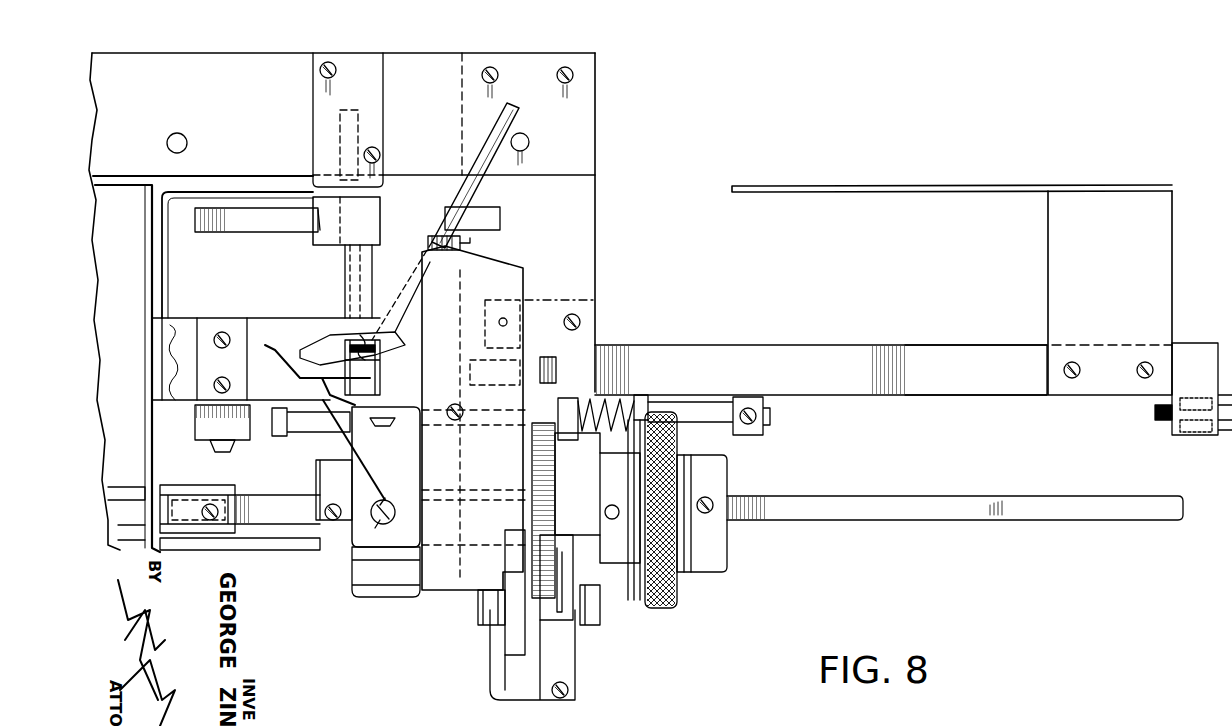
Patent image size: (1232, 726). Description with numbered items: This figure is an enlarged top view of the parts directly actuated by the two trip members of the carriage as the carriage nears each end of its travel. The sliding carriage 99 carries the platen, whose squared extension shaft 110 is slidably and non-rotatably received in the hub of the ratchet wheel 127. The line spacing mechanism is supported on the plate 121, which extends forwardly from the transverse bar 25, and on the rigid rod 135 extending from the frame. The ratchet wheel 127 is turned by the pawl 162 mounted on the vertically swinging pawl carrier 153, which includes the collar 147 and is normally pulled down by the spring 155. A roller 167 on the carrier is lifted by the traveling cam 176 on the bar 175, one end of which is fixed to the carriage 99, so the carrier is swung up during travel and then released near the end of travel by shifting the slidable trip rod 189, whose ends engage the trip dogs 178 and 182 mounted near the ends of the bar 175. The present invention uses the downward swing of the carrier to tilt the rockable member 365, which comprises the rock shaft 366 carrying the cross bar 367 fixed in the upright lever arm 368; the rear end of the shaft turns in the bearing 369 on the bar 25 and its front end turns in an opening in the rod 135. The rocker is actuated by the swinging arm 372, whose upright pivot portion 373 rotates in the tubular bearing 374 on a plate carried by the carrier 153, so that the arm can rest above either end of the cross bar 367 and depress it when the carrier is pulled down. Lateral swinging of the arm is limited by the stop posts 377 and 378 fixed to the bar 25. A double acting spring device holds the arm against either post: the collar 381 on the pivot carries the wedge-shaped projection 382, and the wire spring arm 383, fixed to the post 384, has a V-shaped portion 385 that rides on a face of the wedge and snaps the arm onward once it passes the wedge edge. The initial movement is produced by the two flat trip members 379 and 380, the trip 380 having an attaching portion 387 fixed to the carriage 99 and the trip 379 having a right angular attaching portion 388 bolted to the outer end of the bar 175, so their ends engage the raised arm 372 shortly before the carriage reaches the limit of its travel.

The transverse bar 25 is at (245, 90).
The sliding carriage 99 is at (128, 286).
The squared extension shaft 110 is at (1030, 488).
The plate 121 is at (604, 239).
The ratchet wheel 127 is at (538, 482).
The rigid rod 135 is at (284, 550).
The ring or collar 147 is at (386, 598).
The pawl carrier 153 is at (512, 282).
The spring 155 is at (466, 240).
The pawl 162 is at (566, 545).
The roller 167 is at (544, 355).
The bar 175 is at (958, 355).
The traveling cam 176 is at (790, 350).
The trip dog 178 is at (1160, 425).
The trip dog 182 is at (268, 440).
The slidable trip rod 189 is at (720, 432).
The rockable member 365 is at (290, 243).
The rock shaft 366 is at (344, 283).
The cross bar 367 is at (252, 232).
The upright lever arm 368 is at (339, 257).
The bearing 369 is at (370, 177).
The swinging arm 372 is at (478, 150).
The upright pivot portion 373 is at (360, 340).
The tubular bearing 374 is at (376, 384).
The stop post 377 is at (527, 141).
The stop post 378 is at (170, 138).
The trip member 379 is at (960, 186).
The trip member 380 is at (233, 192).
The hub or collar 381 is at (388, 356).
The wedge-shaped projection 382 is at (318, 354).
The spring arm 383 is at (360, 470).
The post 384 is at (386, 502).
The V-shaped portion 385 is at (307, 375).
The attaching portion 387 is at (170, 298).
The right angular attaching portion 388 is at (1158, 250).